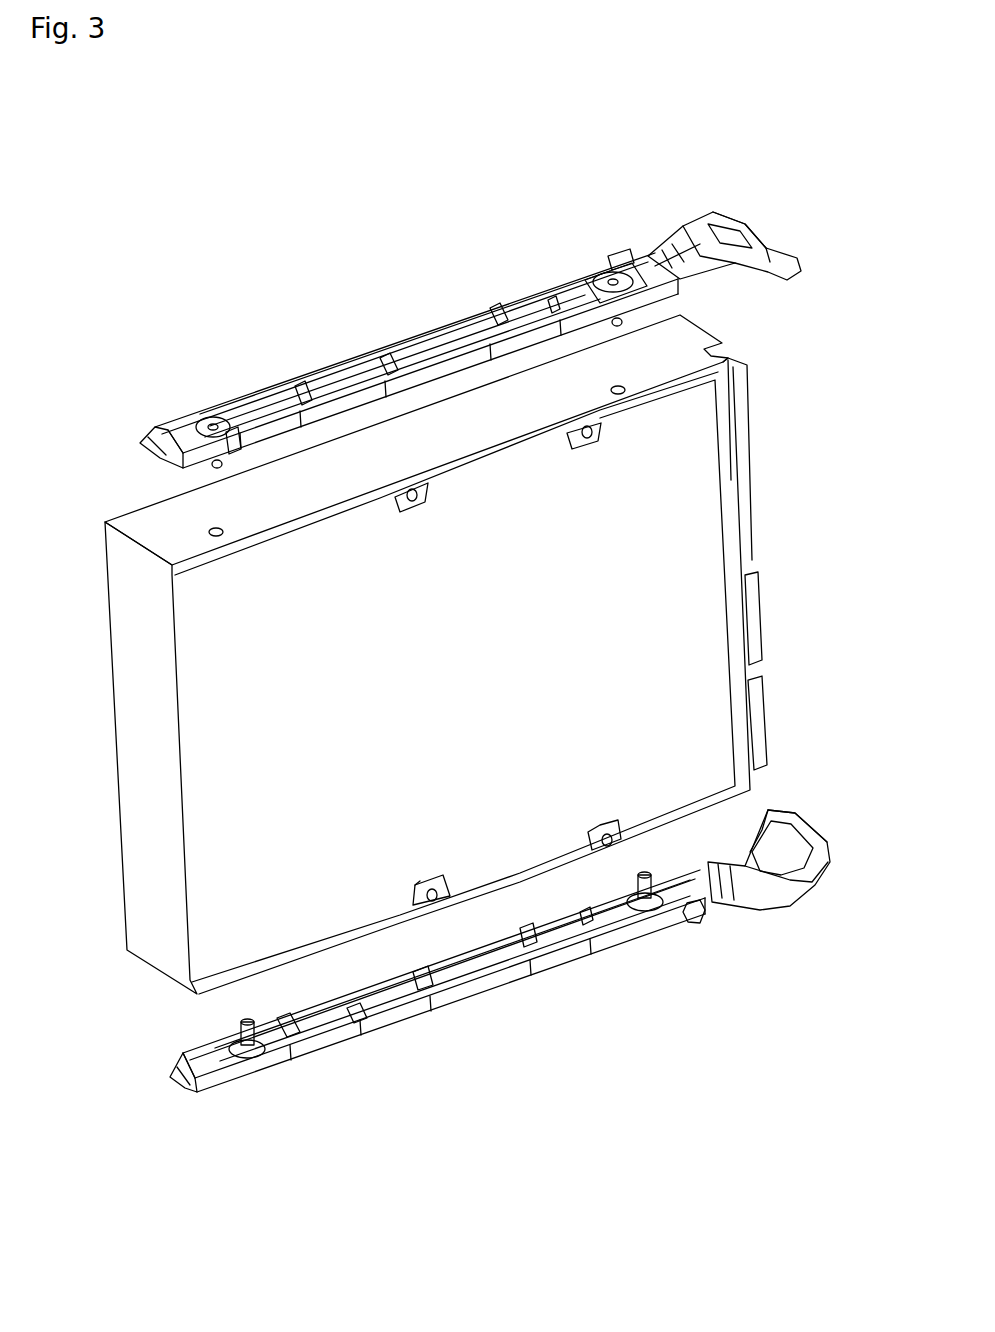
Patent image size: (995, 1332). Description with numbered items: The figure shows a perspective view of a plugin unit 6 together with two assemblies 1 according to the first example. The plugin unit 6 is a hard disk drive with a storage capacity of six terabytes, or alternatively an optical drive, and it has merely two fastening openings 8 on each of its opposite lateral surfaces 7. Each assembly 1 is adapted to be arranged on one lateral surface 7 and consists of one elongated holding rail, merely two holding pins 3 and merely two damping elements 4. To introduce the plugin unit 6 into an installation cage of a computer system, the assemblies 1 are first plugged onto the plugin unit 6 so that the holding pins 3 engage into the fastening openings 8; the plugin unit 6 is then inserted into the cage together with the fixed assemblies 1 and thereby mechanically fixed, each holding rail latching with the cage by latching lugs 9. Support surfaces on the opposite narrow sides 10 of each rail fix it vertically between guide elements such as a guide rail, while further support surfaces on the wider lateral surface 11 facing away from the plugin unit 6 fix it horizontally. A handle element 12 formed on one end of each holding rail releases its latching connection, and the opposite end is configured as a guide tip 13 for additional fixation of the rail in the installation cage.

The assembly 1 is at (777, 190).
The holding pin 3 is at (247, 1024).
The damping element 4 is at (248, 1060).
The plugin unit 6 is at (490, 683).
The lateral surface 7 is at (155, 527).
The fastening opening 8 is at (223, 530).
The latching lug 9 is at (677, 237).
The narrow side 10 is at (342, 402).
The wider lateral surface 11 is at (307, 373).
The handle element 12 is at (727, 210).
The guide tip 13 is at (140, 440).